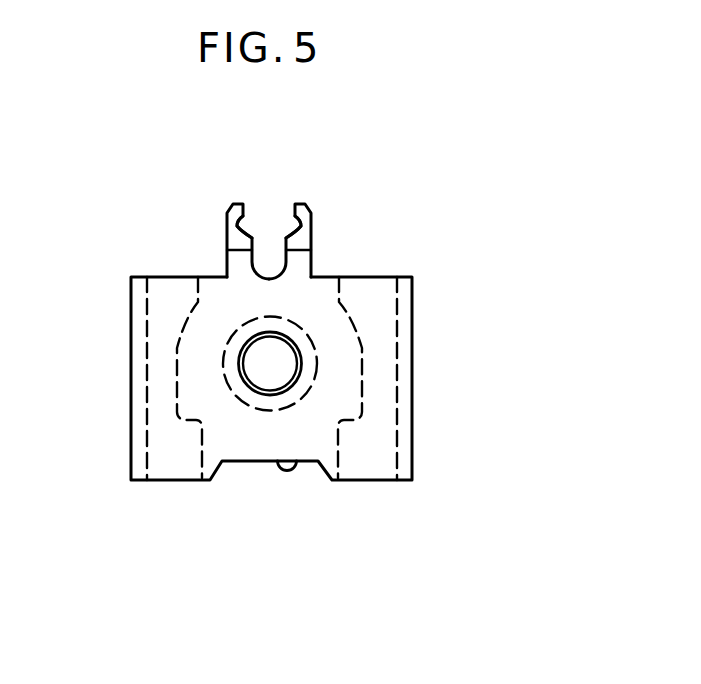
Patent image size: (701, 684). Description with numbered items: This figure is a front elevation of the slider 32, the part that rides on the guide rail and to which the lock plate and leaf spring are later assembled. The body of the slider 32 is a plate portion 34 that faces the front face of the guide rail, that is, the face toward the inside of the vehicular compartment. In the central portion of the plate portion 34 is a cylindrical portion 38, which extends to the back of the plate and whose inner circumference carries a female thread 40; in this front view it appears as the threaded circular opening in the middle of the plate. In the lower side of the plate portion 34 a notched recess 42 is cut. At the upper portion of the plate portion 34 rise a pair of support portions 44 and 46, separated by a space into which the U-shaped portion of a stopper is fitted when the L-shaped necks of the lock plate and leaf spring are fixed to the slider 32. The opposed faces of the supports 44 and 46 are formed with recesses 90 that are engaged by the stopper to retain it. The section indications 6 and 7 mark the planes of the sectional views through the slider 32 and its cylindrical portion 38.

The slider 32 is at (125, 442).
The plate portion 34 is at (218, 427).
The cylindrical portion 38 is at (317, 342).
The female thread 40 is at (289, 379).
The notched recess 42 is at (293, 467).
The support portion 44 is at (314, 217).
The support portion 46 is at (227, 230).
The recess 90 is at (250, 222).
The section line 6- 6 is at (272, 198).
The section line 7- 7 is at (122, 362).